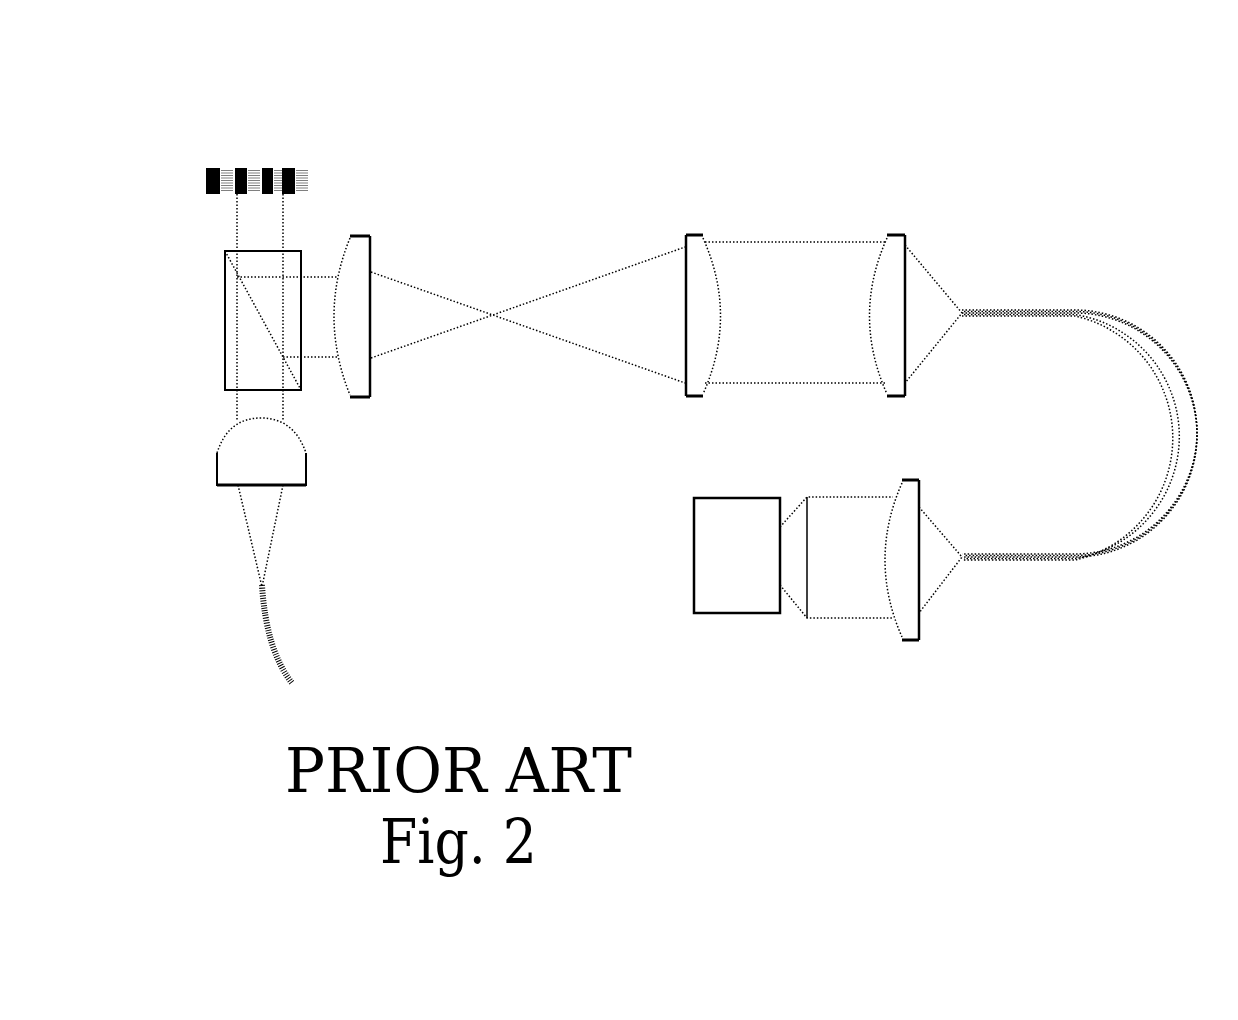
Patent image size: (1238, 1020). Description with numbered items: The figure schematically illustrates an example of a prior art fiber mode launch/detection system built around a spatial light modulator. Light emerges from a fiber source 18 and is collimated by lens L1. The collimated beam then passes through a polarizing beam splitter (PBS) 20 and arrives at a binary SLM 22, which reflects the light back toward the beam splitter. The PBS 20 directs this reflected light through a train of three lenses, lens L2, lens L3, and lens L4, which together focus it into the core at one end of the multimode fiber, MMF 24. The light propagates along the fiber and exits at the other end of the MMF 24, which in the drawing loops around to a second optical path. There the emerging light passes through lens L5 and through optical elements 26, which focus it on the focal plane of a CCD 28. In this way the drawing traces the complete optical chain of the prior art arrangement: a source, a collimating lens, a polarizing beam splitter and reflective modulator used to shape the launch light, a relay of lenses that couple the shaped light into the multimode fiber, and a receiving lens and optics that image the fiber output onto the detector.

The fiber source 18 is at (265, 652).
The polarizing beam splitter 20 is at (225, 318).
The binary SLM 22 is at (206, 180).
The MMF 24 is at (1135, 530).
The optical elements 26 is at (795, 617).
The CCD 28 is at (718, 612).
The lens L1 is at (308, 465).
The lens L2 is at (364, 235).
The lens L3 is at (697, 233).
The lens L4 is at (903, 233).
The lens L5 is at (912, 648).